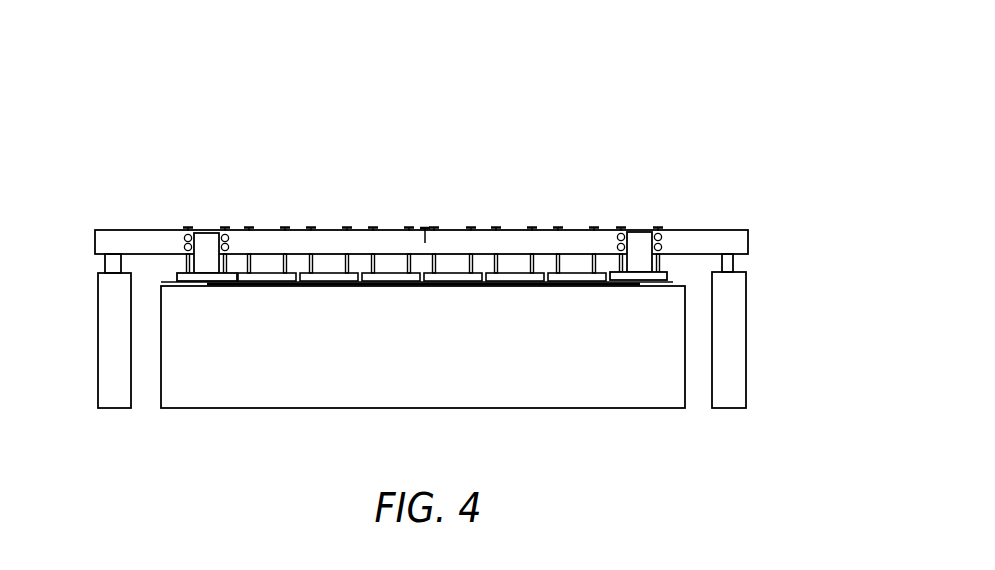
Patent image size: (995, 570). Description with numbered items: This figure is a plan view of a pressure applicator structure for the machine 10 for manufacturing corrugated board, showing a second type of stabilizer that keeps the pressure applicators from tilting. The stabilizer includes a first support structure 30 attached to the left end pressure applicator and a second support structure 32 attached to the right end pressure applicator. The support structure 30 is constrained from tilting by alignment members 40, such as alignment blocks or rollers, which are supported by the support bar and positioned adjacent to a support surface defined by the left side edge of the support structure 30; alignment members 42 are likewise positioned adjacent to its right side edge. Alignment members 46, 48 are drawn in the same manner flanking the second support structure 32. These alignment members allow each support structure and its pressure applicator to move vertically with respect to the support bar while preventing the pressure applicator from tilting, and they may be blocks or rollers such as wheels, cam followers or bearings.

The machine 10 is at (88, 75).
The first support structure 30 is at (202, 230).
The second support structure 32 is at (643, 230).
The alignment members 40 is at (162, 243).
The alignment members 42 is at (248, 243).
The alignment member 46 is at (594, 242).
The alignment member 48 is at (680, 242).